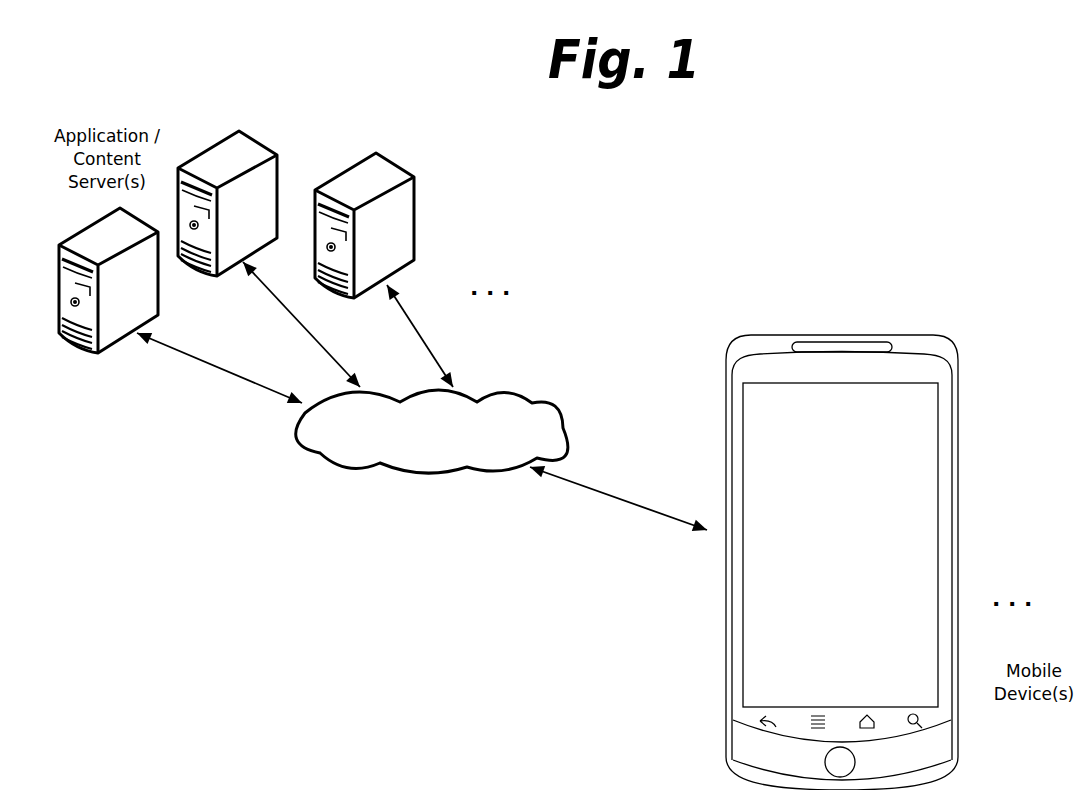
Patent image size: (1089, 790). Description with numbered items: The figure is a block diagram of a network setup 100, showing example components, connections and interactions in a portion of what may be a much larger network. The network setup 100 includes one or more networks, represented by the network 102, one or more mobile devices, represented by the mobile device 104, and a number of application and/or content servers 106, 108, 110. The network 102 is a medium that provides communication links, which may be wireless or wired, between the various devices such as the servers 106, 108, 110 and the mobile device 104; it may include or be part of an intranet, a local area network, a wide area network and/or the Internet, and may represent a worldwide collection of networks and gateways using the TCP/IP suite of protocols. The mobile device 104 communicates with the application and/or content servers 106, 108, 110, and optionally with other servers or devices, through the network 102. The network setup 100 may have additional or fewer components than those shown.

The network setup 100 is at (838, 201).
The network 102 is at (343, 468).
The mobile device 104 is at (727, 742).
The application and/or content server 106 is at (80, 352).
The application and/or content server 108 is at (267, 142).
The application and/or content server 110 is at (415, 198).